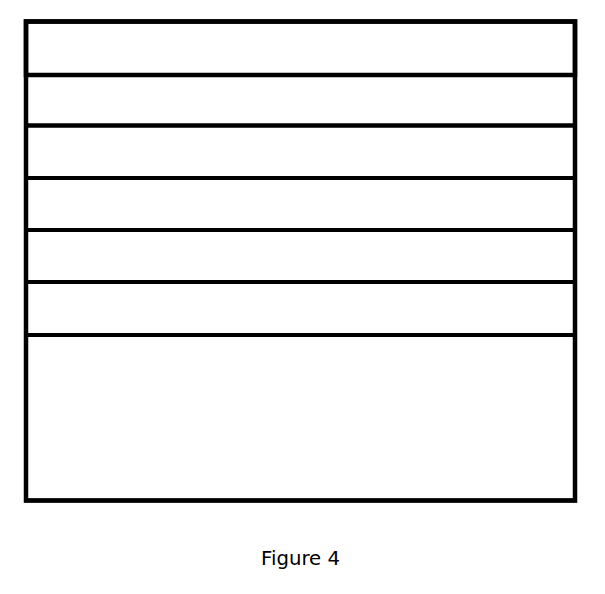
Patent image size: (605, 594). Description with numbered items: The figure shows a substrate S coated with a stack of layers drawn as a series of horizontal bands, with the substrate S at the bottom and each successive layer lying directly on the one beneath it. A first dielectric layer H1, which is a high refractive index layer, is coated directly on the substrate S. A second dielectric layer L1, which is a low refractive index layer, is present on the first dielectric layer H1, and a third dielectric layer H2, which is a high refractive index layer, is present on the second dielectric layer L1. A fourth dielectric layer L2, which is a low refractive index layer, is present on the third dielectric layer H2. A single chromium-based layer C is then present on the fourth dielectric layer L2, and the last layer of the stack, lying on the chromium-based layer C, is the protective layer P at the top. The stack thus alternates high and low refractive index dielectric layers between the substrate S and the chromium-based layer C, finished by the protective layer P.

The protective layer P is at (300, 49).
The chromium-based layer C is at (300, 100).
The fourth dielectric layer L2 is at (300, 152).
The third dielectric layer H2 is at (300, 204).
The second dielectric layer L1 is at (300, 256).
The first dielectric layer H1 is at (300, 308).
The substrate S is at (300, 418).